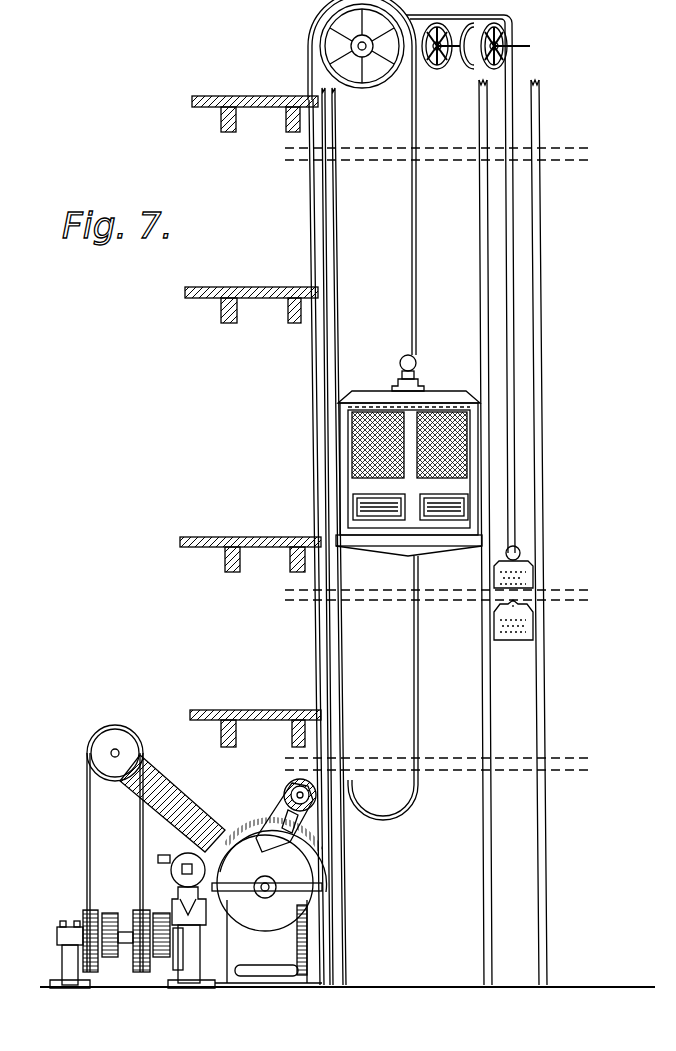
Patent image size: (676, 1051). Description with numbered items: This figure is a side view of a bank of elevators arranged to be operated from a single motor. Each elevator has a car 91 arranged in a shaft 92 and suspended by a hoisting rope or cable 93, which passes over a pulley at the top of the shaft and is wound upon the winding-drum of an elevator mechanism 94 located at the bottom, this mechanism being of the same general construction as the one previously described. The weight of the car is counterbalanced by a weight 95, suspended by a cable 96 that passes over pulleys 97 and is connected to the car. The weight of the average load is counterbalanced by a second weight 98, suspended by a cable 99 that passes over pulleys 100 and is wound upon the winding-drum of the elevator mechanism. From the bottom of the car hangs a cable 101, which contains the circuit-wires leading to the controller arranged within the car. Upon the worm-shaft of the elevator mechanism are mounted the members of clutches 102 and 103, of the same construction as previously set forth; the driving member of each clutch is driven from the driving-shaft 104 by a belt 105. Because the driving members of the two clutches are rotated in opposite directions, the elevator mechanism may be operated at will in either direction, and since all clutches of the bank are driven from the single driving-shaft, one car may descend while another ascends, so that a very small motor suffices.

The car 91 is at (465, 452).
The shaft 92 is at (384, 177).
The hoisting rope or cable 93 is at (406, 206).
The elevator mechanism 94 is at (322, 887).
The weight 95 is at (518, 579).
The cable 96 is at (565, 495).
The pulleys 97 is at (500, 40).
The weight 98 is at (525, 630).
The cable 99 is at (316, 398).
The pulleys 100 is at (321, 42).
The cable 101 is at (405, 688).
The clutch 102 is at (122, 890).
The clutch 103 is at (160, 950).
The driving-shaft 104 is at (120, 753).
The belt 105 is at (88, 840).